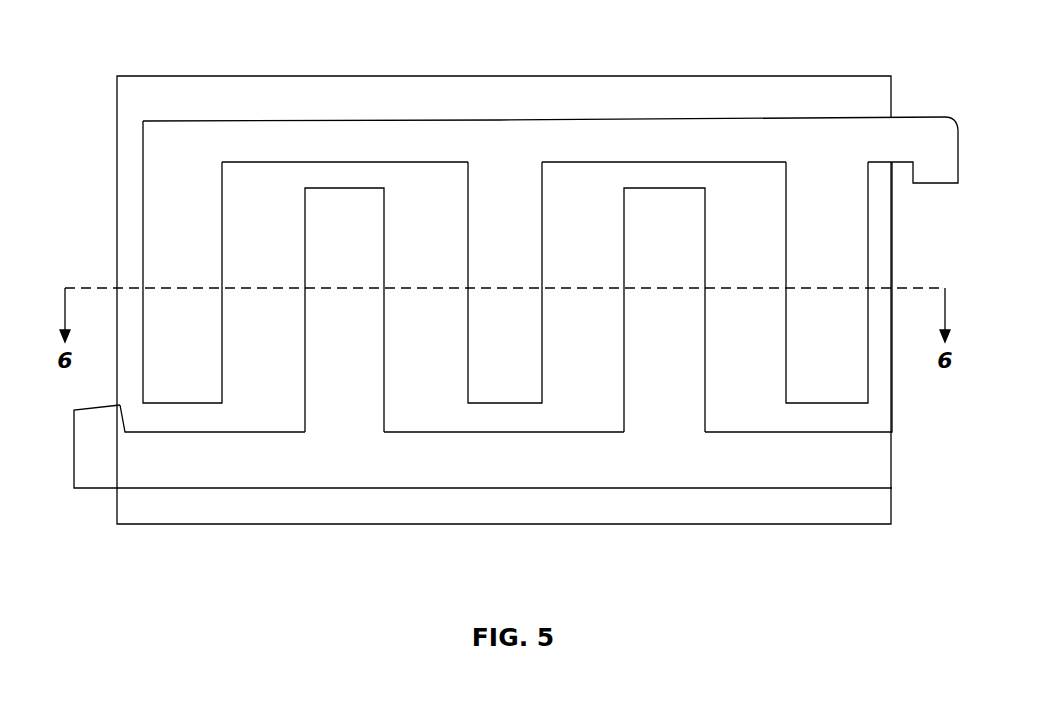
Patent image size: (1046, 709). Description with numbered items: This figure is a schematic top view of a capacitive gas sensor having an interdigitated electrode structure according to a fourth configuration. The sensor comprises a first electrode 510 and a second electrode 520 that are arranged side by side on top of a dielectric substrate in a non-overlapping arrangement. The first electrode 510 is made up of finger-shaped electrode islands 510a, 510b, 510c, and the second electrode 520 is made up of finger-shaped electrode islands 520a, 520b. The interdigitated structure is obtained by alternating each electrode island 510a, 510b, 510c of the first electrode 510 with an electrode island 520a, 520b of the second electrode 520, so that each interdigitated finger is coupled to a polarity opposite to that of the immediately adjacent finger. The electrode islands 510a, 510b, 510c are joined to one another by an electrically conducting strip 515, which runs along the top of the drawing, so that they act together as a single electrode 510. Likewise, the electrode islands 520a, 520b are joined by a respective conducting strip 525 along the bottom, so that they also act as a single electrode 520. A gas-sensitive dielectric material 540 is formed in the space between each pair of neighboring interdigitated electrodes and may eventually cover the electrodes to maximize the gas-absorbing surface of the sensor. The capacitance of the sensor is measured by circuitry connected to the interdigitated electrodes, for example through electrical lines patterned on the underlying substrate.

The first electrode 510 is at (502, 214).
The electrode island 510a is at (163, 232).
The electrode island 510b is at (478, 307).
The electrode island 510c is at (800, 307).
The electrically conducting strip 515 is at (403, 137).
The second electrode 520 is at (483, 371).
The electrode island 520a is at (363, 265).
The electrode island 520b is at (683, 265).
The conducting strip 525 is at (532, 470).
The gas-sensitive dielectric material 540 is at (178, 512).